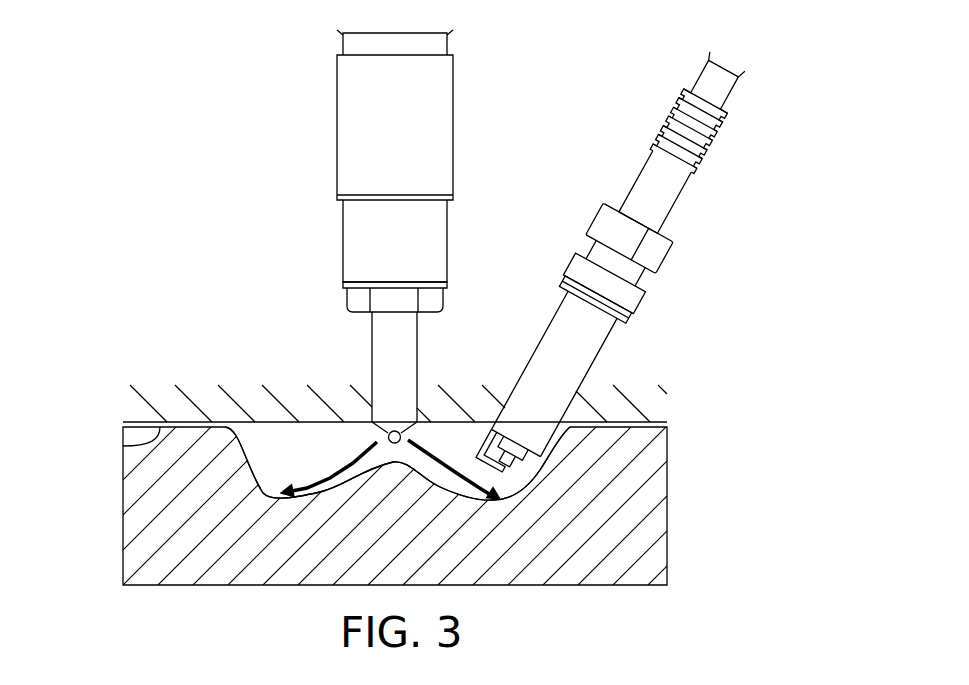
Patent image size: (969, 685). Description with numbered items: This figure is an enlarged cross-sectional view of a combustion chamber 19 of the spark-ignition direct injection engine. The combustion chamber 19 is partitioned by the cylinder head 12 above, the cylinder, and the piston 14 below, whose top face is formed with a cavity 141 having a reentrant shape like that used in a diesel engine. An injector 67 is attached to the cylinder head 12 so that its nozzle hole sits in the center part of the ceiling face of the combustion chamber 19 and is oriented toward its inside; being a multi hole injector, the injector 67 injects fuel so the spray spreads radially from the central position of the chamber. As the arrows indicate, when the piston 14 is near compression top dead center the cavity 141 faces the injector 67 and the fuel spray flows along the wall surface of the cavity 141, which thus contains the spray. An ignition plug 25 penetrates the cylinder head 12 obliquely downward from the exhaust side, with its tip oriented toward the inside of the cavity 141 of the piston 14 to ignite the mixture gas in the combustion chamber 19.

The cylinder head 12 is at (123, 447).
The piston 14 is at (648, 523).
The cavity 141 is at (242, 446).
The combustion chamber 19 is at (326, 445).
The ignition plug 25 is at (589, 342).
The injector 67 is at (337, 134).